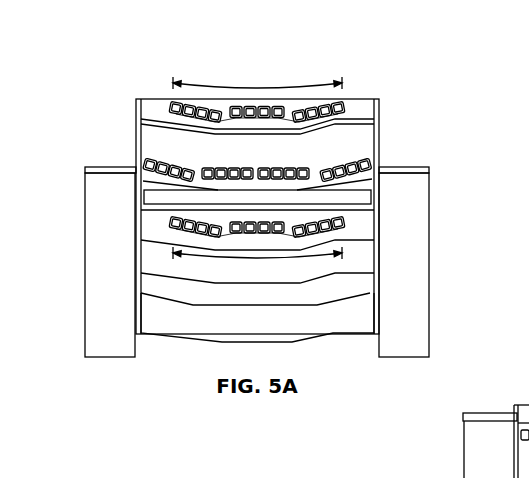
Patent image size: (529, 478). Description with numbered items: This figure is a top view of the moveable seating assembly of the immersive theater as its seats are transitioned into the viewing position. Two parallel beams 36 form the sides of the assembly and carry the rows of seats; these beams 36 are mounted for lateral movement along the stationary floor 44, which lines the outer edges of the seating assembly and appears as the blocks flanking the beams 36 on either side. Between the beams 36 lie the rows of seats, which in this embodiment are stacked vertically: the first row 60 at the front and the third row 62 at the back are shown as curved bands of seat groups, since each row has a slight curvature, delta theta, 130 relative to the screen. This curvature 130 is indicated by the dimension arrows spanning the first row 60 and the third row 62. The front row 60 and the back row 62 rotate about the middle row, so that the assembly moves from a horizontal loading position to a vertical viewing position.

The parallel beams 36 is at (150, 146).
The stationary floor 44 is at (402, 281).
The first row 60 is at (163, 101).
The third row 62 is at (156, 221).
The slight curvature 130 is at (252, 52).